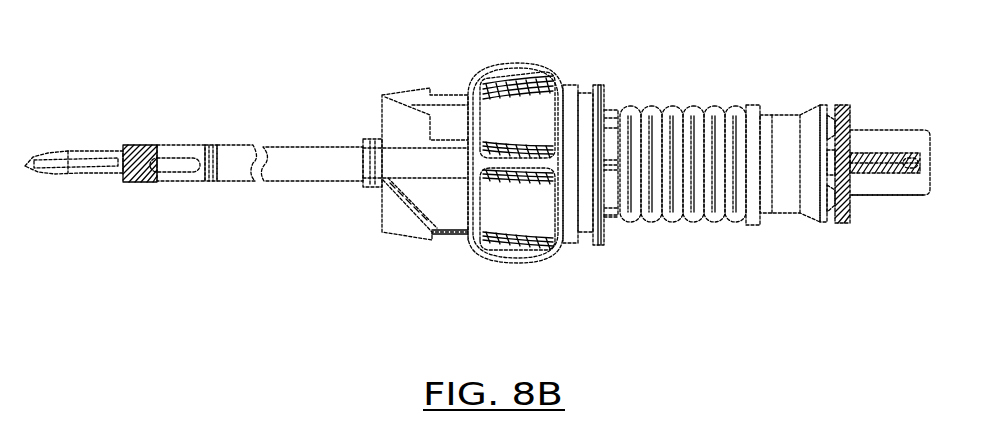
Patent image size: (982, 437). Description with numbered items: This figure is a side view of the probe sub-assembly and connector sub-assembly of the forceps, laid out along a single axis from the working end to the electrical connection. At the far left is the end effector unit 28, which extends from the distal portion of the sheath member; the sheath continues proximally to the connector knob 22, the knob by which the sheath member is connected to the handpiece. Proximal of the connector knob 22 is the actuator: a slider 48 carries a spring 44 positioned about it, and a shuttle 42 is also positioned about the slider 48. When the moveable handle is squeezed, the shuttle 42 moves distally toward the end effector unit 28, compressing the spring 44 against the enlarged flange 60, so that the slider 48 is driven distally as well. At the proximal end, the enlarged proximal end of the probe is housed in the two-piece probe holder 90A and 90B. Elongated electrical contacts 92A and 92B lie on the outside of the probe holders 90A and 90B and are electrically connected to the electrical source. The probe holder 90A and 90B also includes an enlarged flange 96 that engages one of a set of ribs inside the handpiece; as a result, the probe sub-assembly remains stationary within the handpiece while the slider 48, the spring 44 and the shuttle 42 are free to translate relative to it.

The connector knob 22 is at (453, 233).
The end effector unit 28 is at (82, 198).
The shuttle 42 is at (782, 115).
The spring 44 is at (705, 103).
The slider 48 is at (683, 222).
The enlarged flange 60 is at (610, 228).
The probe holder 90A is at (938, 195).
The probe holder 90B is at (900, 130).
The elongated electrical contact 92A is at (887, 168).
The elongated electrical contact 92B is at (867, 160).
The enlarged flange 96 is at (843, 105).